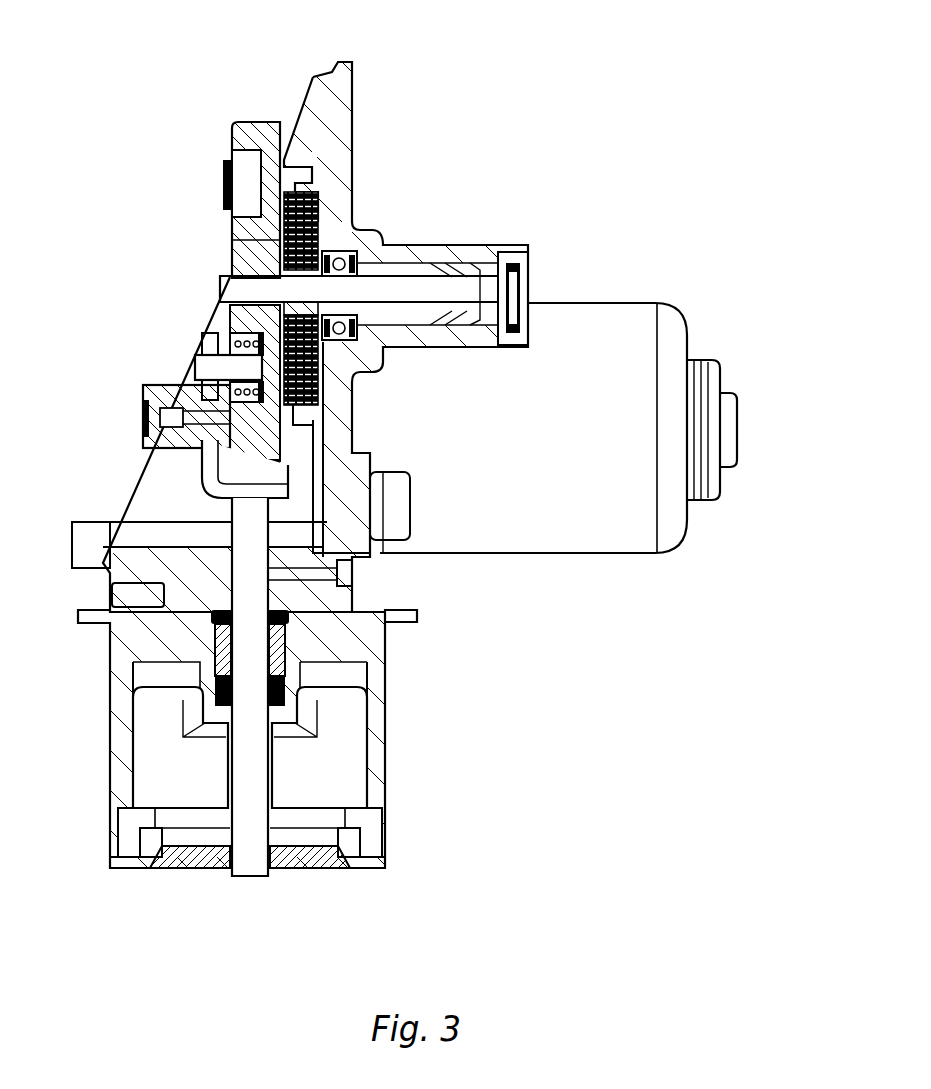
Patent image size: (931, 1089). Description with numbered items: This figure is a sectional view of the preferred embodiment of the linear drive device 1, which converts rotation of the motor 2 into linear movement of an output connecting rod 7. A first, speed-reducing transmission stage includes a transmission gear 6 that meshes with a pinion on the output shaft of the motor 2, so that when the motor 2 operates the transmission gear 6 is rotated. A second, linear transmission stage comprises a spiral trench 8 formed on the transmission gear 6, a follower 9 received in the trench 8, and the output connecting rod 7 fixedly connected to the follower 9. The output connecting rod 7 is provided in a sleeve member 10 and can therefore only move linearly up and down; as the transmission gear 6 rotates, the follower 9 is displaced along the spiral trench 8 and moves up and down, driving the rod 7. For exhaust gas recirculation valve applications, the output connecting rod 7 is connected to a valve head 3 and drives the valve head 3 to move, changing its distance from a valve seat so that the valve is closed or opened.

The linear drive device 1 is at (510, 78).
The motor 2 is at (582, 358).
The valve head 3 is at (305, 860).
The transmission gear 6 is at (256, 135).
The output connecting rod 7 is at (244, 822).
The spiral trench 8 is at (240, 183).
The follower 9 is at (228, 372).
The sleeve member 10 is at (280, 609).